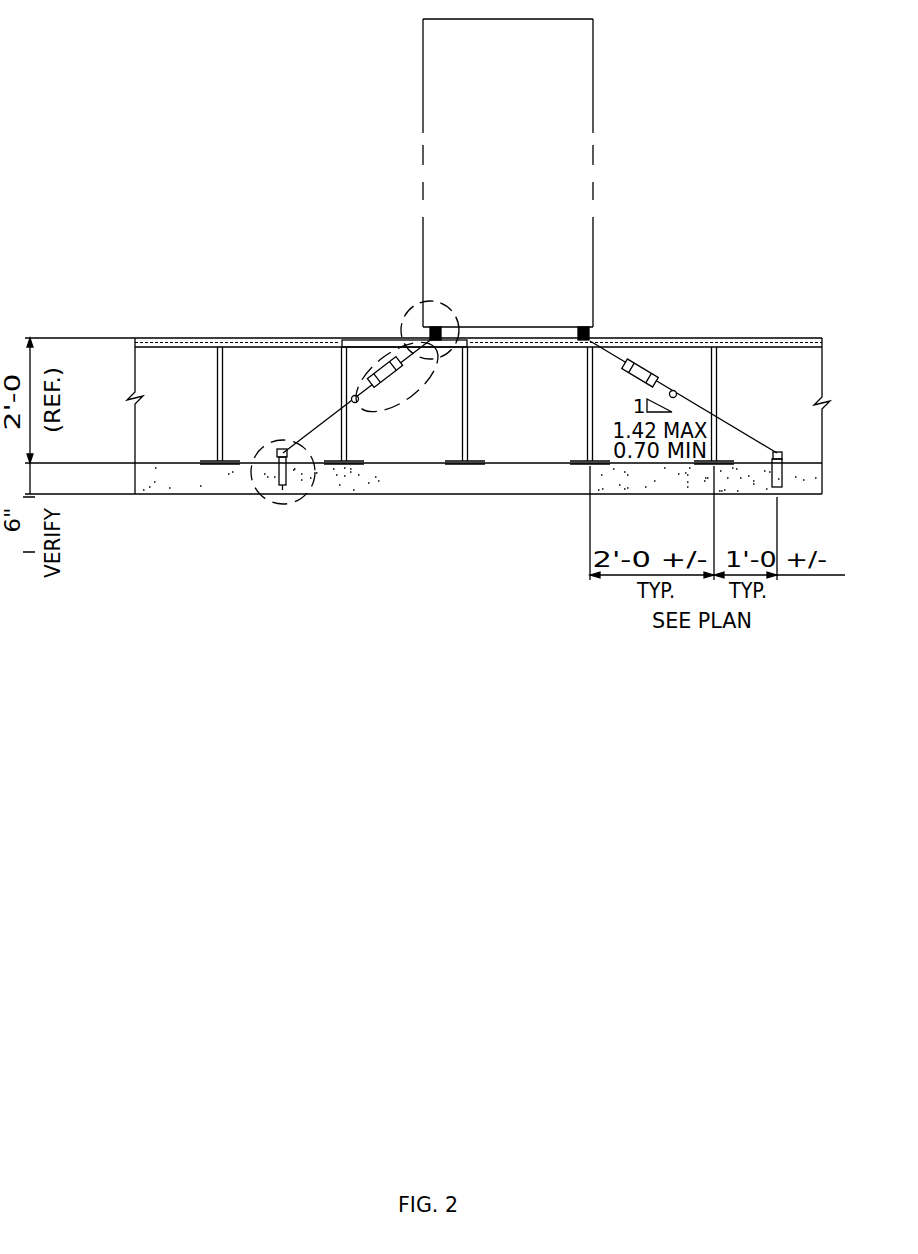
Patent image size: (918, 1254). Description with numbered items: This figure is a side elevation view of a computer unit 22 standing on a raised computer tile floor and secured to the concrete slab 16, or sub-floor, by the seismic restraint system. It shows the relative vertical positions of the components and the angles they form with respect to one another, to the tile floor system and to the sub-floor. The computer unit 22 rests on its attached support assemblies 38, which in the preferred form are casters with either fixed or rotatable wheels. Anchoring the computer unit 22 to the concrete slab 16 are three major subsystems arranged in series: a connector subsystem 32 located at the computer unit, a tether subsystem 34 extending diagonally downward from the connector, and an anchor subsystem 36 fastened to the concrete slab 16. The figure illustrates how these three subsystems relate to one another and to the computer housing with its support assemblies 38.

The concrete slab 16 is at (423, 495).
The computer unit 22 is at (593, 193).
The connector subsystem 32 is at (410, 306).
The tether subsystem 34 is at (348, 410).
The anchor subsystem 36 is at (258, 498).
The support assemblies 38 is at (440, 332).